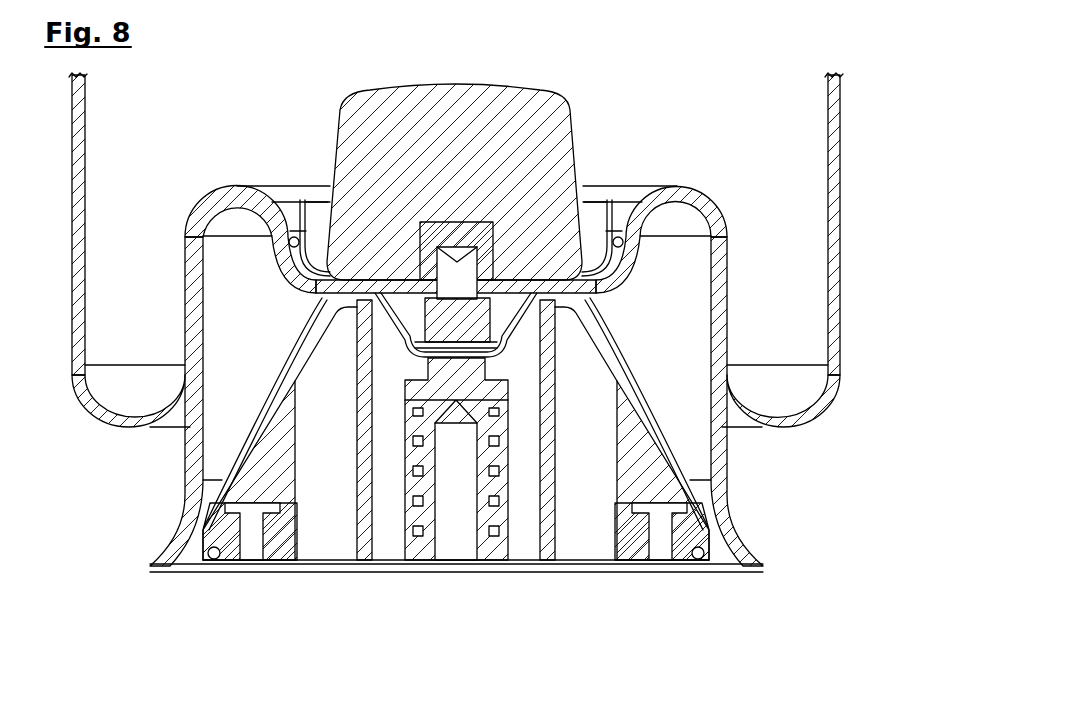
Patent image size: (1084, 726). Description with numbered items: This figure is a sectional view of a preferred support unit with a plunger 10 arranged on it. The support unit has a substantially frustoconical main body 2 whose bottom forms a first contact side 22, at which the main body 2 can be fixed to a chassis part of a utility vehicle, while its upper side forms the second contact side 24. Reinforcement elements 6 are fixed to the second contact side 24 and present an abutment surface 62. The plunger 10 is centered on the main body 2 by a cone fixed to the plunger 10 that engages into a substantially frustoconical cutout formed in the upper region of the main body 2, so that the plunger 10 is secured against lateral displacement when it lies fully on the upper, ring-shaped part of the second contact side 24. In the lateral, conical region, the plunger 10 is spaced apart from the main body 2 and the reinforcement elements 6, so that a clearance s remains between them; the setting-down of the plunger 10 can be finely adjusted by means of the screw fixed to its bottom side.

The main body 2 is at (662, 393).
The reinforcement element 6 is at (612, 333).
The plunger 10 is at (738, 573).
The first contact side 22 is at (525, 562).
The second contact side 24 is at (250, 447).
The abutment surface 62 is at (578, 292).
The clearance s is at (703, 520).